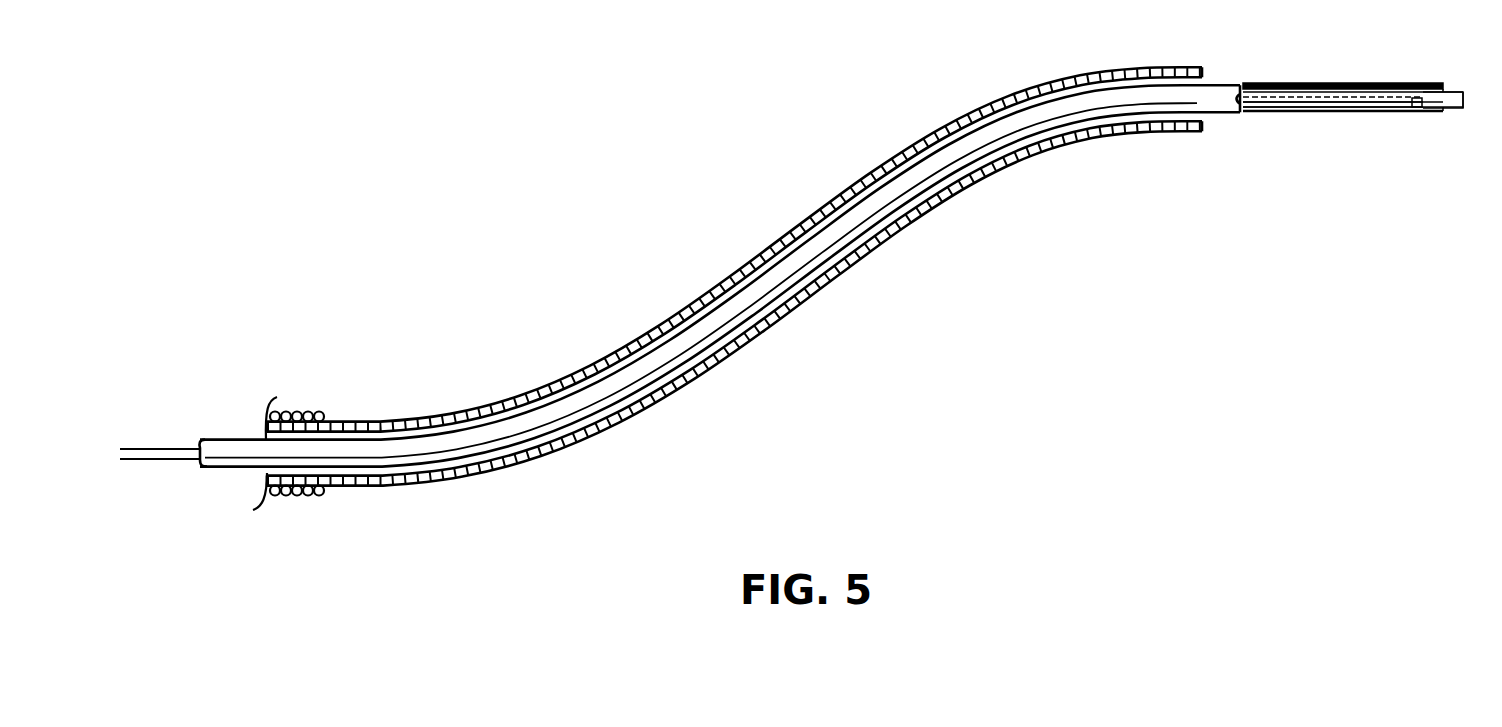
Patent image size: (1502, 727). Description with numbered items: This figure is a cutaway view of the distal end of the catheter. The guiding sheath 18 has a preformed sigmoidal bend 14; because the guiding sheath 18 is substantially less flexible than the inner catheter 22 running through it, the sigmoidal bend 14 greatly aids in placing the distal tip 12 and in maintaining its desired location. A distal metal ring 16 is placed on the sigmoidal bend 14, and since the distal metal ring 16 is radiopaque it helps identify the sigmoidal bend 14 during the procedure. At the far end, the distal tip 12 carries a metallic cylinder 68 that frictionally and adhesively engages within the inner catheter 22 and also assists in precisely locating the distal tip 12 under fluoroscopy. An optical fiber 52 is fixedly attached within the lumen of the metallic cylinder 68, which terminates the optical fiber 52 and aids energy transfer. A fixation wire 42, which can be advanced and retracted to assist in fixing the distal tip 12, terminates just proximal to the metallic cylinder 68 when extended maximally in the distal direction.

The distal tip 12 is at (805, 288).
The sigmoidal bend 14 is at (822, 297).
The distal metal ring 16 is at (308, 415).
The guiding sheath 18 is at (555, 387).
The inner catheter 22 is at (1349, 136).
The fixation wire 42 is at (1387, 110).
The optical fiber 52 is at (1413, 97).
The metallic cylinder 68 is at (1450, 95).